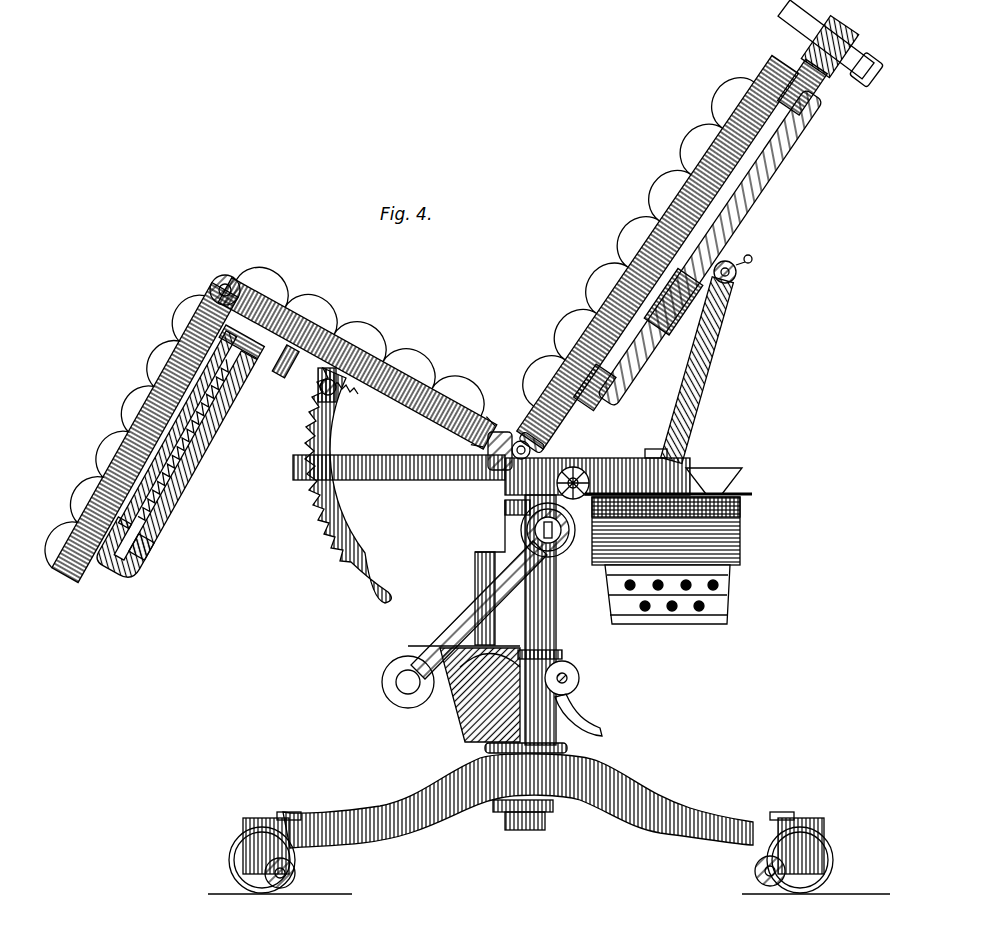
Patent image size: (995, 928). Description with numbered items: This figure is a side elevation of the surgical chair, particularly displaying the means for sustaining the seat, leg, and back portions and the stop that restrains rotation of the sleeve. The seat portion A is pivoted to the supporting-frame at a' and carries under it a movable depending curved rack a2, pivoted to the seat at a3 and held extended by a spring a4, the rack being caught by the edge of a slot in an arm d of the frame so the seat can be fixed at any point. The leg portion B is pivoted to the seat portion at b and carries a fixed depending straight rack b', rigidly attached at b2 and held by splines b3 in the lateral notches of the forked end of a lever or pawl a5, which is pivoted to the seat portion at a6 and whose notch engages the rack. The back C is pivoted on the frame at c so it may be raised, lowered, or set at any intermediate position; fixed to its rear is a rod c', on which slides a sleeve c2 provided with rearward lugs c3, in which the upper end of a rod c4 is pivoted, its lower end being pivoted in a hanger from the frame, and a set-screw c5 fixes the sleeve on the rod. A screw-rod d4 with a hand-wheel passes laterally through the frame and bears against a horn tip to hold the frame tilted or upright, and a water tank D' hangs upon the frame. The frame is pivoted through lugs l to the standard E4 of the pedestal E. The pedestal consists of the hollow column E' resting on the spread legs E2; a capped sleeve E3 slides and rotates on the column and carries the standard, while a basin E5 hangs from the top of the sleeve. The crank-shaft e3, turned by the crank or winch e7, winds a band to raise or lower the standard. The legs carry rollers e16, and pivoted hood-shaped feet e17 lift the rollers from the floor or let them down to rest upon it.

The seat portion A is at (363, 353).
The leg portion B is at (137, 428).
The pivot of leg portion b is at (232, 285).
The lever or pawl a5 is at (216, 480).
The straight rack b' is at (183, 441).
The rack attachment points b2 is at (216, 346).
The splines b3 is at (193, 441).
The pawl pivot a6 is at (288, 366).
The spring a4 is at (342, 389).
The rack pivot a3 is at (340, 398).
The curved rack a2 is at (357, 529).
The arm of supporting-frame d is at (397, 468).
The seat pivot a' is at (500, 434).
The back pivot c is at (544, 437).
The set-screw or screw-rod d4 is at (584, 462).
The water receptacle or tank D' is at (676, 560).
The back C is at (645, 247).
The rod c' is at (728, 210).
The sleeve c2 is at (702, 274).
The rod c4 is at (706, 356).
The lugs c3 is at (737, 276).
The set-screw c5 is at (752, 258).
The pedestal E is at (548, 620).
The lugs of the frame l is at (508, 507).
The standard E4 is at (508, 538).
The crank-shaft e3 is at (563, 553).
The crank or winch e7 is at (468, 608).
The basin or can E5 is at (464, 694).
The capped sleeve E3 is at (548, 734).
The spread legs E2 is at (518, 801).
The hollow column E' is at (523, 828).
The pivoted feet e17 is at (243, 860).
The rollers e16 is at (294, 877).